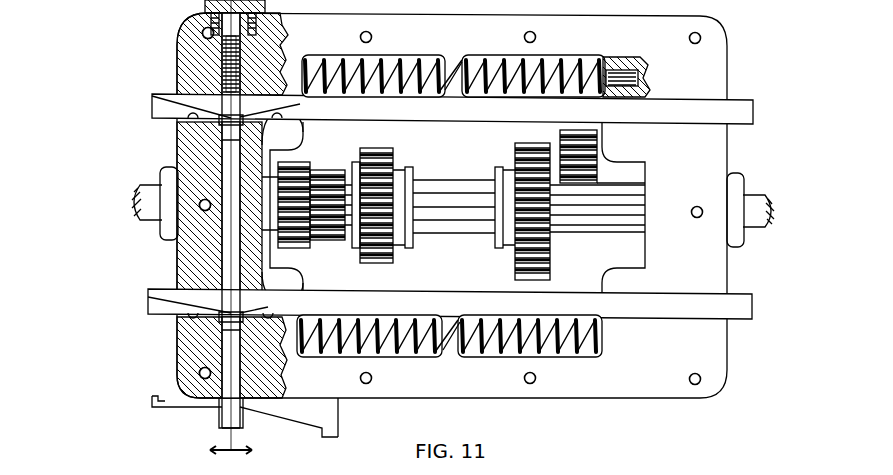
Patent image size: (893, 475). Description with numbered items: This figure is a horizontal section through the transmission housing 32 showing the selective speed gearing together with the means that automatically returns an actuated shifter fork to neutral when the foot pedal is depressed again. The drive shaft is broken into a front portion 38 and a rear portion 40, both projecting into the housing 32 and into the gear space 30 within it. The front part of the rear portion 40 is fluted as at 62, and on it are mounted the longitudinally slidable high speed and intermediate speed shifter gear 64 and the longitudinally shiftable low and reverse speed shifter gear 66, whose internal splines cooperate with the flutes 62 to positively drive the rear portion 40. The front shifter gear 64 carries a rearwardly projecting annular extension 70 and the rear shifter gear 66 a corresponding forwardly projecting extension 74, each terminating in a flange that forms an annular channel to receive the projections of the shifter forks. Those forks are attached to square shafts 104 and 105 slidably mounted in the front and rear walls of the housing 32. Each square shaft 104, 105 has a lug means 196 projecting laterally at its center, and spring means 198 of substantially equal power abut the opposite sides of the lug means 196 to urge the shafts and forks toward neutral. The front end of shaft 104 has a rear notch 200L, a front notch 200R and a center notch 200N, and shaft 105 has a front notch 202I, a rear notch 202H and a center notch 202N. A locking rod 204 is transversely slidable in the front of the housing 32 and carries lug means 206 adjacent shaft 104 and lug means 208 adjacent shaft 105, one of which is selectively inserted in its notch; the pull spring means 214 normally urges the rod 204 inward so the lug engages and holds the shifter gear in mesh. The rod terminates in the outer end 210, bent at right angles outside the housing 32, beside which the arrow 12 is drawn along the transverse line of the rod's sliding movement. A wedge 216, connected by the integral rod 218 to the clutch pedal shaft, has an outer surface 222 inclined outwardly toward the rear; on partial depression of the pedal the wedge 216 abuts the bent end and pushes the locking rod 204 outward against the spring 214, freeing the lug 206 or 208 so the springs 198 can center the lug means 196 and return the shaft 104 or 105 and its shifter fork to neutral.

The direction arrow 12 is at (231, 460).
The gear chamber 30 is at (463, 253).
The transmission housing 32 is at (633, 378).
The front portion of drive shaft 38 is at (150, 207).
The rear portion of drive shaft 40 is at (758, 210).
The flutes 62 is at (452, 190).
The high speed and intermediate speed shifter gear 64 is at (393, 257).
The low and reverse speed shifter gear 66 is at (550, 257).
The annular extension 70 is at (406, 170).
The extension 74 is at (507, 182).
The square shaft 104 is at (737, 113).
The square shaft 105 is at (738, 311).
The lug means 196 is at (452, 72).
The spring means 198 is at (400, 62).
The center notch 200N is at (178, 93).
The front notch 200R is at (152, 110).
The rear notch 200L is at (300, 118).
The center notch 202N is at (177, 278).
The front notch 202I is at (148, 297).
The rear notch 202H is at (265, 309).
The locking rod 204 is at (233, 370).
The lug means 206 is at (233, 129).
The lug means 208 is at (233, 325).
The outer end of locking rod 210 is at (230, 415).
The pull spring means 214 is at (230, 57).
The wedge 216 is at (320, 413).
The integral rod 218 is at (175, 400).
The inclined outer surface 222 is at (285, 422).